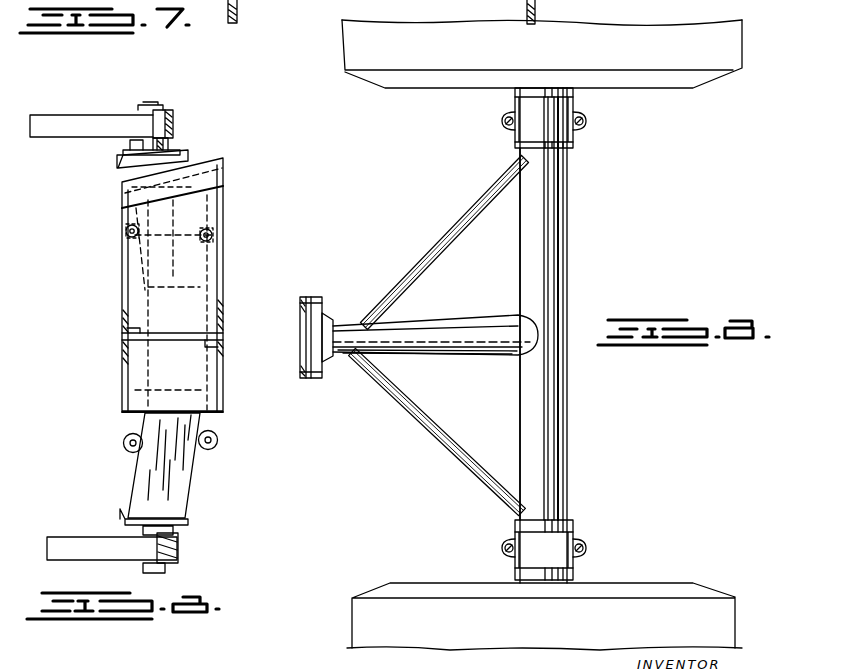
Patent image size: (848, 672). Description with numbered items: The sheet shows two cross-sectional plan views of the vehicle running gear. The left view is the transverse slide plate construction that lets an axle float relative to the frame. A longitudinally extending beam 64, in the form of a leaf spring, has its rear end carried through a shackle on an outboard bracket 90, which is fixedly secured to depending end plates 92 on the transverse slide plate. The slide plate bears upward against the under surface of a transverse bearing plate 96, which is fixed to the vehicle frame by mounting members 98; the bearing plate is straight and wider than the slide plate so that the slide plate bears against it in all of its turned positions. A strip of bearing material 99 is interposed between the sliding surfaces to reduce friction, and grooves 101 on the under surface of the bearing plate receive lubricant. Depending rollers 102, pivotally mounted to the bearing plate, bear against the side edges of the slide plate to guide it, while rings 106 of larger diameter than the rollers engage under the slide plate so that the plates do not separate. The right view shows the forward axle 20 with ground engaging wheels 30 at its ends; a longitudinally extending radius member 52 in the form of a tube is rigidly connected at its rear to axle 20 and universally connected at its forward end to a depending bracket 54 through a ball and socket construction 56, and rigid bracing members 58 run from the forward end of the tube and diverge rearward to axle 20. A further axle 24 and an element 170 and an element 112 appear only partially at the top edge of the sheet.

In FIG. 8, the beam 64 is at (52, 138).
In FIG. 8, the outboard bracket 90 is at (175, 139).
In FIG. 8, the depending end plate 92 is at (188, 160).
In FIG. 8, the bearing plate 96 is at (205, 300).
In FIG. 8, the mounting member 98 is at (135, 333).
In FIG. 8, the groove 101 is at (140, 272).
In FIG. 8, the strip of bearing material 99 is at (183, 472).
In FIG. 8, the roller 102 is at (128, 448).
In FIG. 8, the ring 106 is at (130, 458).
In FIG. 9, the ground engaging wheel 30 is at (618, 78).
In FIG. 9, the axle 20 is at (555, 276).
In FIG. 9, the bracing member 58 is at (450, 245).
In FIG. 9, the radius member 52 is at (410, 325).
In FIG. 9, the depending bracket 54 is at (305, 296).
In FIG. 9, the ball and socket construction 56 is at (325, 365).
In FIG. 9, the member 112 is at (385, 6).
In FIG. 9, the axle 24 is at (455, 4).
In FIG. 9, the pin 170 is at (536, 6).